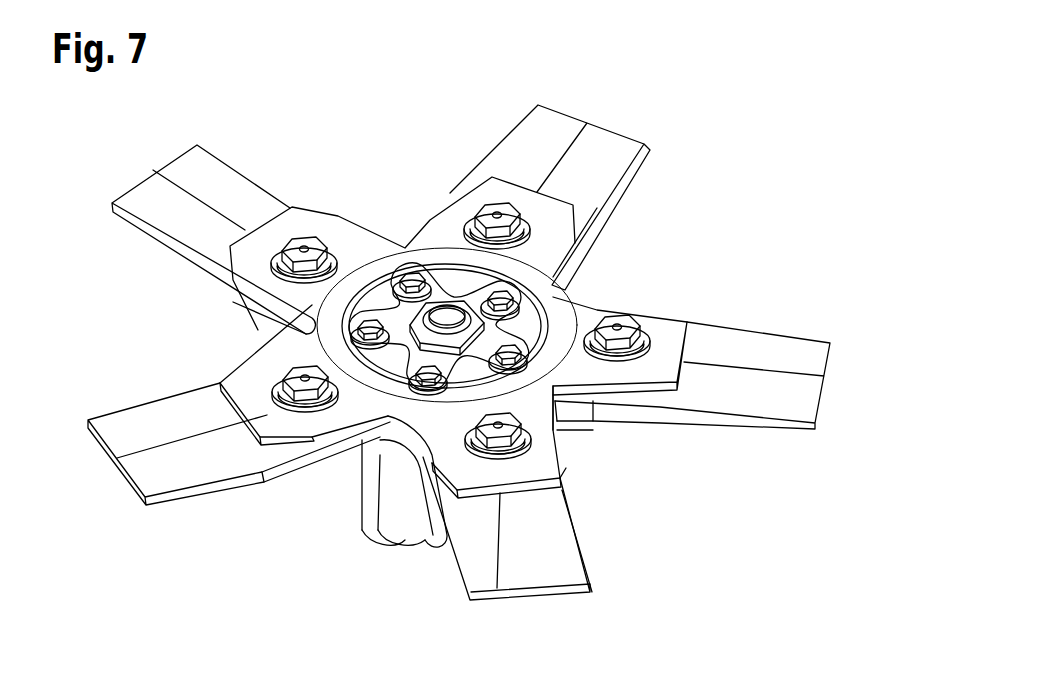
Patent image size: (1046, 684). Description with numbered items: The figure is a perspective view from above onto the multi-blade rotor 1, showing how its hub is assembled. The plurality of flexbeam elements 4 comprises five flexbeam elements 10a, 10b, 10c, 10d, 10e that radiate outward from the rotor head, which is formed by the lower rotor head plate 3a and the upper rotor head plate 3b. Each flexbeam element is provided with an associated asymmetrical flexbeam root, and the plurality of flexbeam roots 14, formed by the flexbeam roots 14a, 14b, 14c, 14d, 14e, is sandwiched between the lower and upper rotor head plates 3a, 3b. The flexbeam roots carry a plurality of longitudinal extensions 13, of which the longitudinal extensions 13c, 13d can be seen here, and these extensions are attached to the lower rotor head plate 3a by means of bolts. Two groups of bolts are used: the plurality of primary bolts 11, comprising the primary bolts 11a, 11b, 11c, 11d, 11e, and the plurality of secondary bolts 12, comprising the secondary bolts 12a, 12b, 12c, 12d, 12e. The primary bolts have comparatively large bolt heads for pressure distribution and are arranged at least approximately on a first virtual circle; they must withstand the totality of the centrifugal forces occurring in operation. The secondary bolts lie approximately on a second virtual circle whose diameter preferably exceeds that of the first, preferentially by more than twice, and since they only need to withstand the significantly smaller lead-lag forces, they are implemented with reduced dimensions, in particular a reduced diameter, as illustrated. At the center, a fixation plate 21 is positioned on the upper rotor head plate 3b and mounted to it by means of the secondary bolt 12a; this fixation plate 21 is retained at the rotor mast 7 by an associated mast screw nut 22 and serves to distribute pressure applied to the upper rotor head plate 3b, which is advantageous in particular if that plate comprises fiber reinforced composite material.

The multi-blade rotor 1 is at (140, 133).
The lower rotor head plate 3a is at (355, 472).
The upper rotor head plate 3b is at (603, 435).
The plurality of flexbeam elements 4 is at (648, 174).
The rotor mast 7 is at (420, 530).
The flexbeam element 10a is at (150, 200).
The flexbeam element 10b is at (612, 143).
The flexbeam element 10c is at (797, 402).
The flexbeam element 10d is at (577, 572).
The flexbeam element 10e is at (143, 468).
The plurality of primary bolts 11 is at (293, 229).
The primary bolt 11a is at (275, 250).
The primary bolt 11b is at (497, 213).
The primary bolt 11c is at (622, 324).
The primary bolt 11d is at (496, 432).
The primary bolt 11e is at (285, 376).
The plurality of secondary bolts 12 is at (424, 250).
The secondary bolt 12a is at (410, 272).
The secondary bolt 12b is at (505, 292).
The secondary bolt 12c is at (528, 340).
The secondary bolt 12d is at (420, 385).
The secondary bolt 12e is at (352, 327).
The plurality of longitudinal extensions 13 is at (590, 370).
The longitudinal extension 13c is at (573, 410).
The longitudinal extension 13d is at (392, 485).
The plurality of flexbeam roots 14 is at (283, 485).
The flexbeam root 14a is at (220, 307).
The flexbeam root 14b is at (610, 233).
The flexbeam root 14c is at (690, 388).
The flexbeam root 14d is at (588, 493).
The flexbeam root 14e is at (314, 480).
The fixation plate 21 is at (583, 486).
The mast screw nut 22 is at (403, 311).